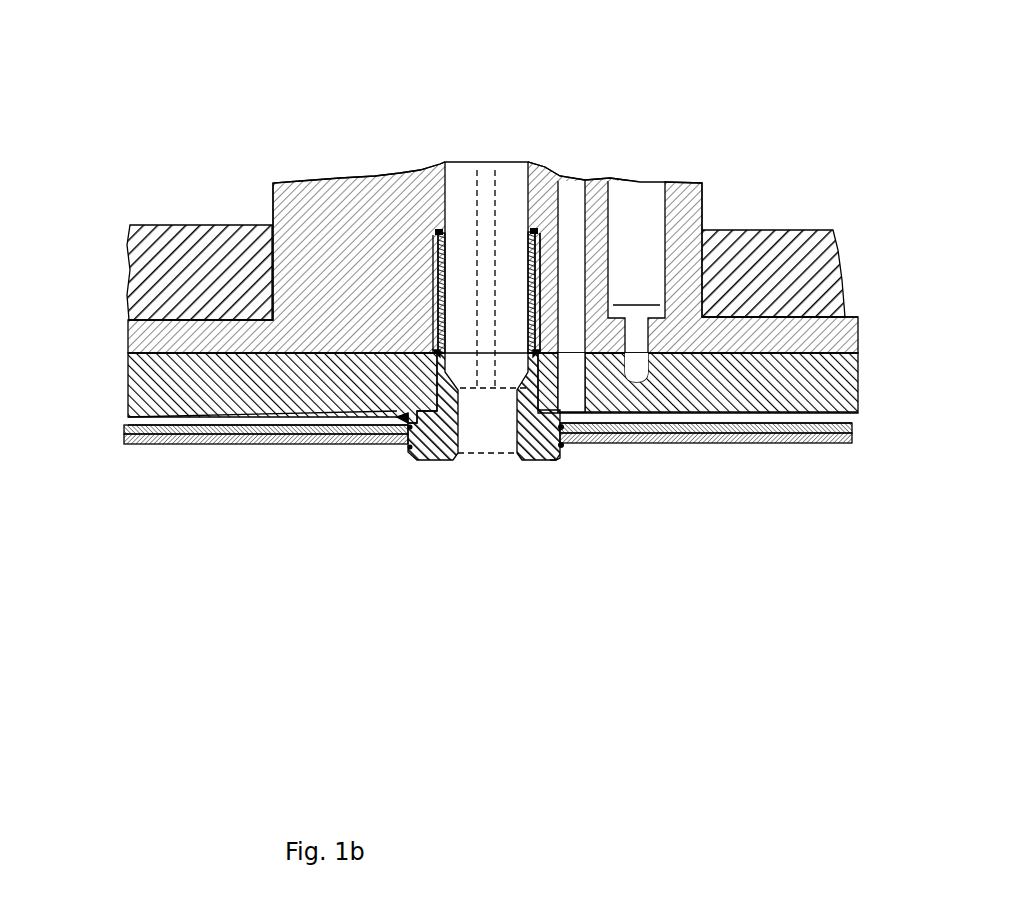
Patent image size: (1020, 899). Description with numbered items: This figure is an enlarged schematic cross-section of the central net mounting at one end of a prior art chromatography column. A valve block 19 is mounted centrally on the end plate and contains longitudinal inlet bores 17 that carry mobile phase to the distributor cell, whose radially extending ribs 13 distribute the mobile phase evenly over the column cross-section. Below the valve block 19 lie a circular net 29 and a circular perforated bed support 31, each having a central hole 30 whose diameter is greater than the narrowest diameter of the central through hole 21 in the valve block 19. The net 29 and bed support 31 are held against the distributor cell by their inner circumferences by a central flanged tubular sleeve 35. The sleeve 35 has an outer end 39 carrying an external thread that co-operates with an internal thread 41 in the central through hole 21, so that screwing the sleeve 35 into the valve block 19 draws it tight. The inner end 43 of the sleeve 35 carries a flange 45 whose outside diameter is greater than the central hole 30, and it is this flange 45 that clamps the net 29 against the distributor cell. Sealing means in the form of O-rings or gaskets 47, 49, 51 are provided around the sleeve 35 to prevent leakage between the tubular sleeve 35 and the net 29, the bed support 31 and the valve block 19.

The radially extending ribs 13 is at (702, 232).
The longitudinal inlet bores 17 is at (570, 352).
The valve block 19 is at (273, 185).
The central through hole 21 is at (483, 208).
The circular net 29 is at (750, 417).
The central hole 30 is at (268, 228).
The circular perforated bed support 31 is at (782, 437).
The flanged tubular sleeve 35 is at (435, 280).
The outer end 39 is at (433, 238).
The internal thread 41 is at (557, 237).
The inner end 43 is at (437, 472).
The flange 45 is at (560, 458).
The O-ring 47 is at (563, 453).
The O-ring 49 is at (563, 447).
The O-ring 51 is at (442, 233).